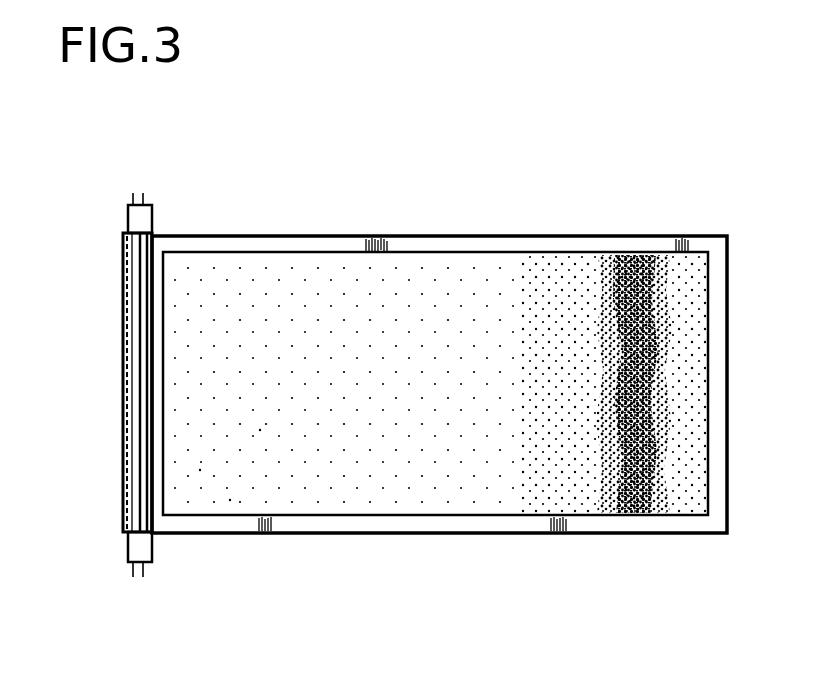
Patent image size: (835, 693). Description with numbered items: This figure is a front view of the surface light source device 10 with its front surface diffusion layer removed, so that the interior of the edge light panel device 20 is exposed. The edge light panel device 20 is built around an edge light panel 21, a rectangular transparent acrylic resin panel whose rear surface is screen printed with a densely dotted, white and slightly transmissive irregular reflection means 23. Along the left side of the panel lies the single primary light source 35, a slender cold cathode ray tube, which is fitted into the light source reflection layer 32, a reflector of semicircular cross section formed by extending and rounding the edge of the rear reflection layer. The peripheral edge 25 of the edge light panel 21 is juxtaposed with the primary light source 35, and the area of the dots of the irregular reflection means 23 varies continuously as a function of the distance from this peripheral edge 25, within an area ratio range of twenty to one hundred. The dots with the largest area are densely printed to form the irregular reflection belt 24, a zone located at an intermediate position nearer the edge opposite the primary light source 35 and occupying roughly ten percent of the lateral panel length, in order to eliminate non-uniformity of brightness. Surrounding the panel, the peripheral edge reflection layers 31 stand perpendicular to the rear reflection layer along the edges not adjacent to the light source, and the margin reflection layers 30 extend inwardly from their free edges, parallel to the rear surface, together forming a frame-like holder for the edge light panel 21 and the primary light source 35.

The surface light source device 10 is at (86, 583).
The edge light panel device 20 is at (188, 578).
The edge light panel 21 is at (247, 487).
The irregular reflection means 23 is at (420, 284).
The densely printed irregular reflection belt 24 is at (643, 512).
The peripheral edge 25 is at (162, 408).
The margin reflection layers 30 is at (276, 244).
The peripheral edge reflection layers 31 is at (730, 296).
The light source reflection layer 32 is at (123, 333).
The primary light source 35 is at (127, 548).